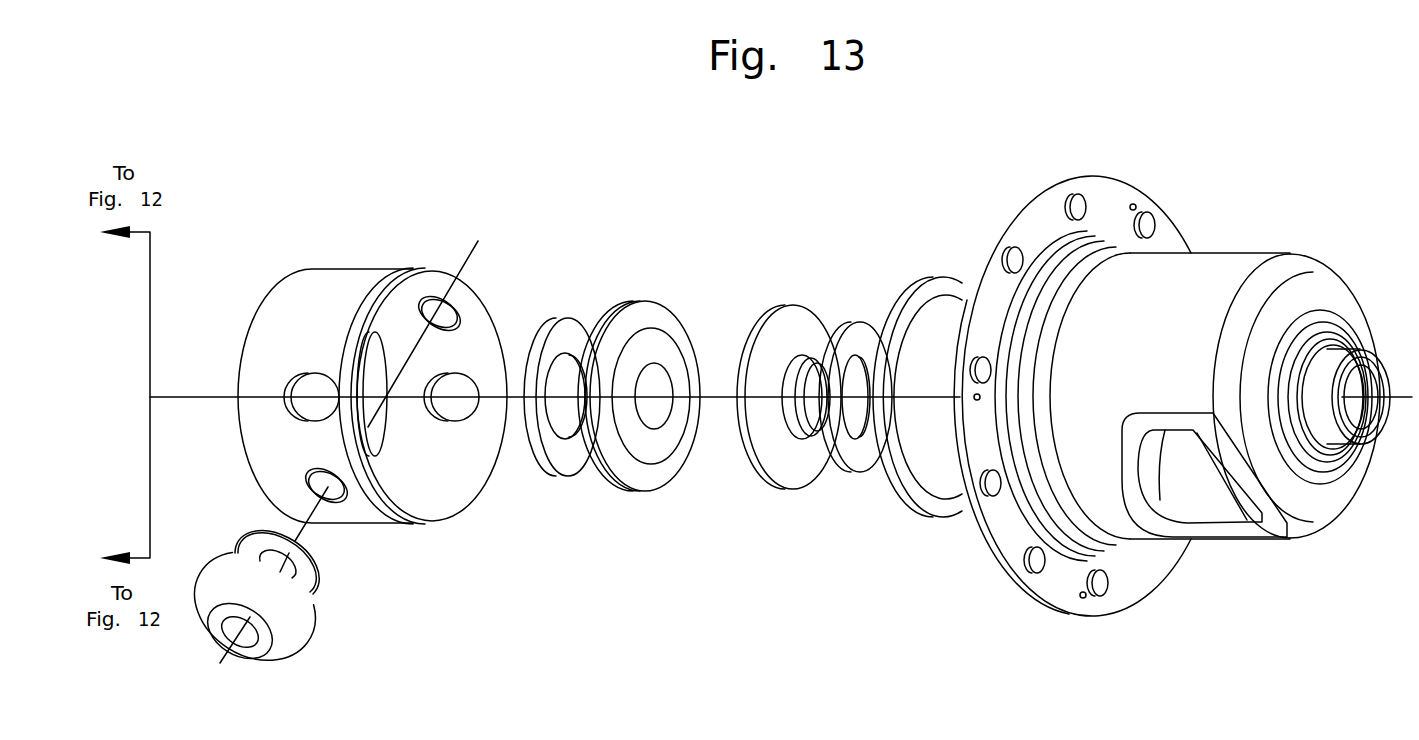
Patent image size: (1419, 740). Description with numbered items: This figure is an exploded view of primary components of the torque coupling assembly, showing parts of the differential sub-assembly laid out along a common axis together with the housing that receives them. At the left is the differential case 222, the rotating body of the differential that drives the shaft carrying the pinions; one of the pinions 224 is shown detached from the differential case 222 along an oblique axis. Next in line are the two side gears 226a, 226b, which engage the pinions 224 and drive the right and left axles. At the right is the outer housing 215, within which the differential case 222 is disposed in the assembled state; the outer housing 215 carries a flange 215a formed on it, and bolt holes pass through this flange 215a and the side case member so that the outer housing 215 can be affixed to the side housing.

The differential case 222 is at (347, 283).
The pinions 224 is at (296, 637).
The side gear 226a is at (652, 313).
The side gear 226b is at (790, 313).
The outer housing 215 is at (1228, 262).
The flange 215a is at (1100, 192).